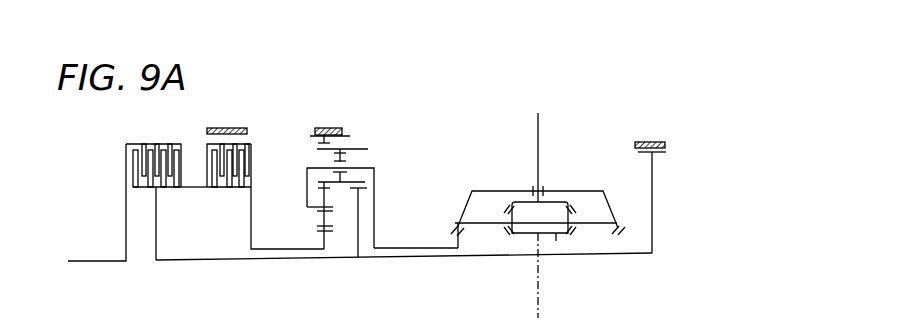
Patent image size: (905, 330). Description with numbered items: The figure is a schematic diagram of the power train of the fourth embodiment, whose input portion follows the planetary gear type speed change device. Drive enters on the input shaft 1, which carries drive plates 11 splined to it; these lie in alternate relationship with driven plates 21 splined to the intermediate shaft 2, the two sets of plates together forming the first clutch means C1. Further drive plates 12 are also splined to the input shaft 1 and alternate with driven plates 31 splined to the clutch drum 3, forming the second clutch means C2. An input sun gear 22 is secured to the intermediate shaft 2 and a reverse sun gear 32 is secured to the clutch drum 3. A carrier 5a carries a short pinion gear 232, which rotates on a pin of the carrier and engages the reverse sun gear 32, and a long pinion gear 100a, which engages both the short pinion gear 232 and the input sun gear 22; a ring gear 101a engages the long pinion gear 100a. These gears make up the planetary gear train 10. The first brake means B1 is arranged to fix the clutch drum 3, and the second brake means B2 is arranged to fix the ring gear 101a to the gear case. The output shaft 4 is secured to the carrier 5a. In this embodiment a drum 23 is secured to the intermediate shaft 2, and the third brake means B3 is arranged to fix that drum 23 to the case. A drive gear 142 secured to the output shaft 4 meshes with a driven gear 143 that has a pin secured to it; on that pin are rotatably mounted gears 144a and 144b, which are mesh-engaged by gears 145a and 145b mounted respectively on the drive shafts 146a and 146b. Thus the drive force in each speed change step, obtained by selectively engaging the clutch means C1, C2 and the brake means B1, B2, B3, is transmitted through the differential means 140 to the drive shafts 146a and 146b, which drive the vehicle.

The input shaft 1 is at (98, 260).
The intermediate shaft 2 is at (213, 262).
The clutch drum 3 is at (252, 154).
The output shaft 4 is at (394, 248).
The planetary gear train 10 is at (345, 211).
The drive plates 11 is at (143, 153).
The drive plates 12 is at (212, 181).
The driven plates 21 is at (164, 182).
The input sun gear 22 is at (357, 240).
The drum 23 is at (655, 154).
The driven plates 31 is at (214, 152).
The reverse sun gear 32 is at (322, 238).
The carrier 5a is at (374, 168).
The long pinion gear 100a is at (368, 149).
The ring gear 101a is at (350, 136).
The differential means 140 is at (547, 208).
The drive gear 142 is at (462, 243).
The driven gear 143 is at (465, 203).
The gear 144a is at (580, 213).
The gear 144b is at (505, 212).
The gear 145a is at (565, 200).
The gear 145b is at (556, 241).
The drive shaft 146a is at (538, 122).
The drive shaft 146b is at (545, 306).
The short pinion gear 232 is at (320, 217).
The first brake means B1 is at (226, 128).
The second brake means B2 is at (333, 128).
The third brake means B3 is at (650, 142).
The first clutch means C1 is at (143, 195).
The second clutch means C2 is at (204, 197).